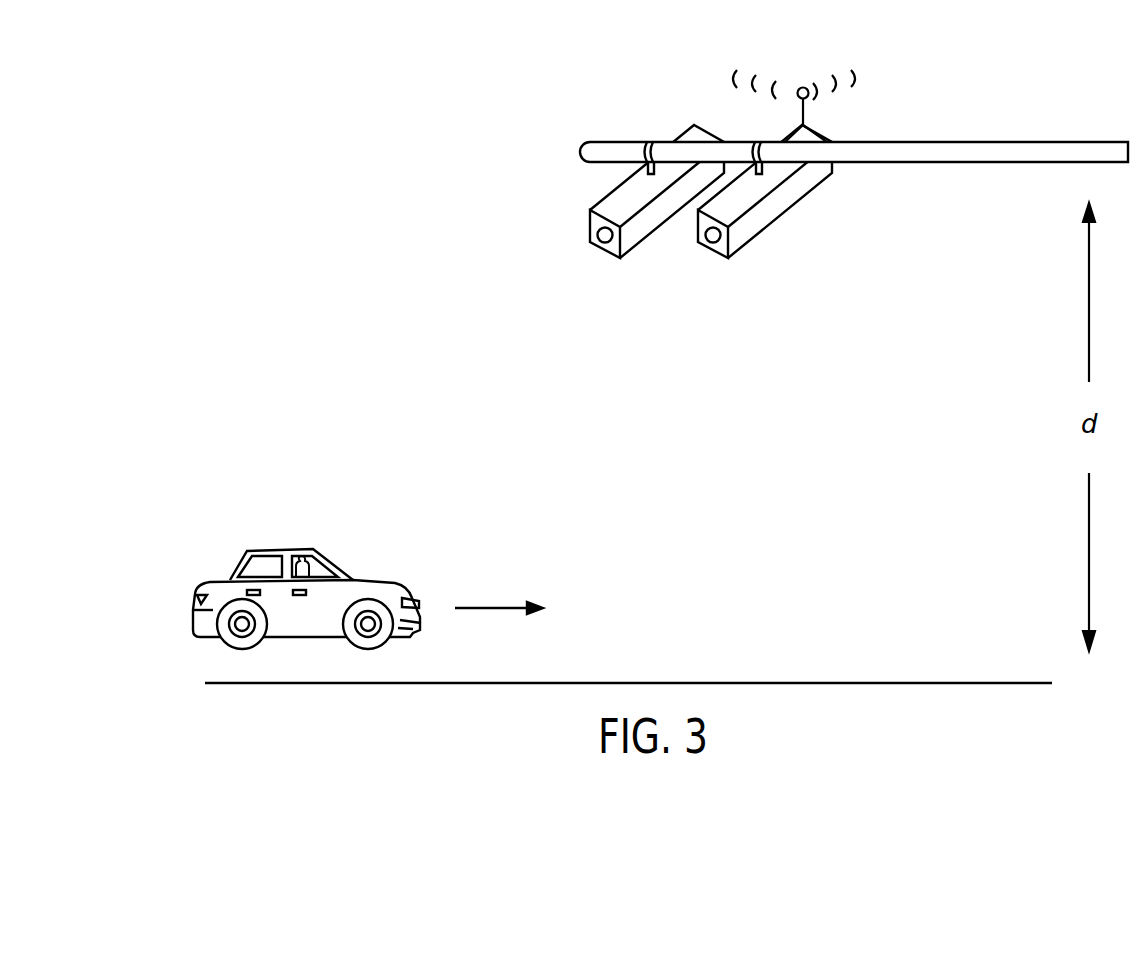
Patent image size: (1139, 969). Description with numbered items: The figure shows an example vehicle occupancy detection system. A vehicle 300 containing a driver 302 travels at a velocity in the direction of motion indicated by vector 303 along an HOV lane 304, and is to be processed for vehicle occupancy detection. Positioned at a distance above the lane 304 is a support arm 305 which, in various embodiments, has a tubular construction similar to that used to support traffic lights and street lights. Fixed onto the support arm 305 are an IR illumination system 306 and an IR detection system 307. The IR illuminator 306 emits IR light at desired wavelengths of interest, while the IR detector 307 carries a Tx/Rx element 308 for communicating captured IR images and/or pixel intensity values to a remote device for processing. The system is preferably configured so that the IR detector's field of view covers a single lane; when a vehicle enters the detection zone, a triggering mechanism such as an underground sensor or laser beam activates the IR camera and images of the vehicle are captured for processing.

The vehicle 300 is at (207, 580).
The driver 302 is at (302, 556).
The vector 303 is at (497, 607).
The HOV lane 304 is at (917, 683).
The support arm 305 is at (638, 142).
The IR illumination system 306 is at (675, 215).
The IR detection system 307 is at (783, 215).
The Tx/Rx element 308 is at (803, 87).